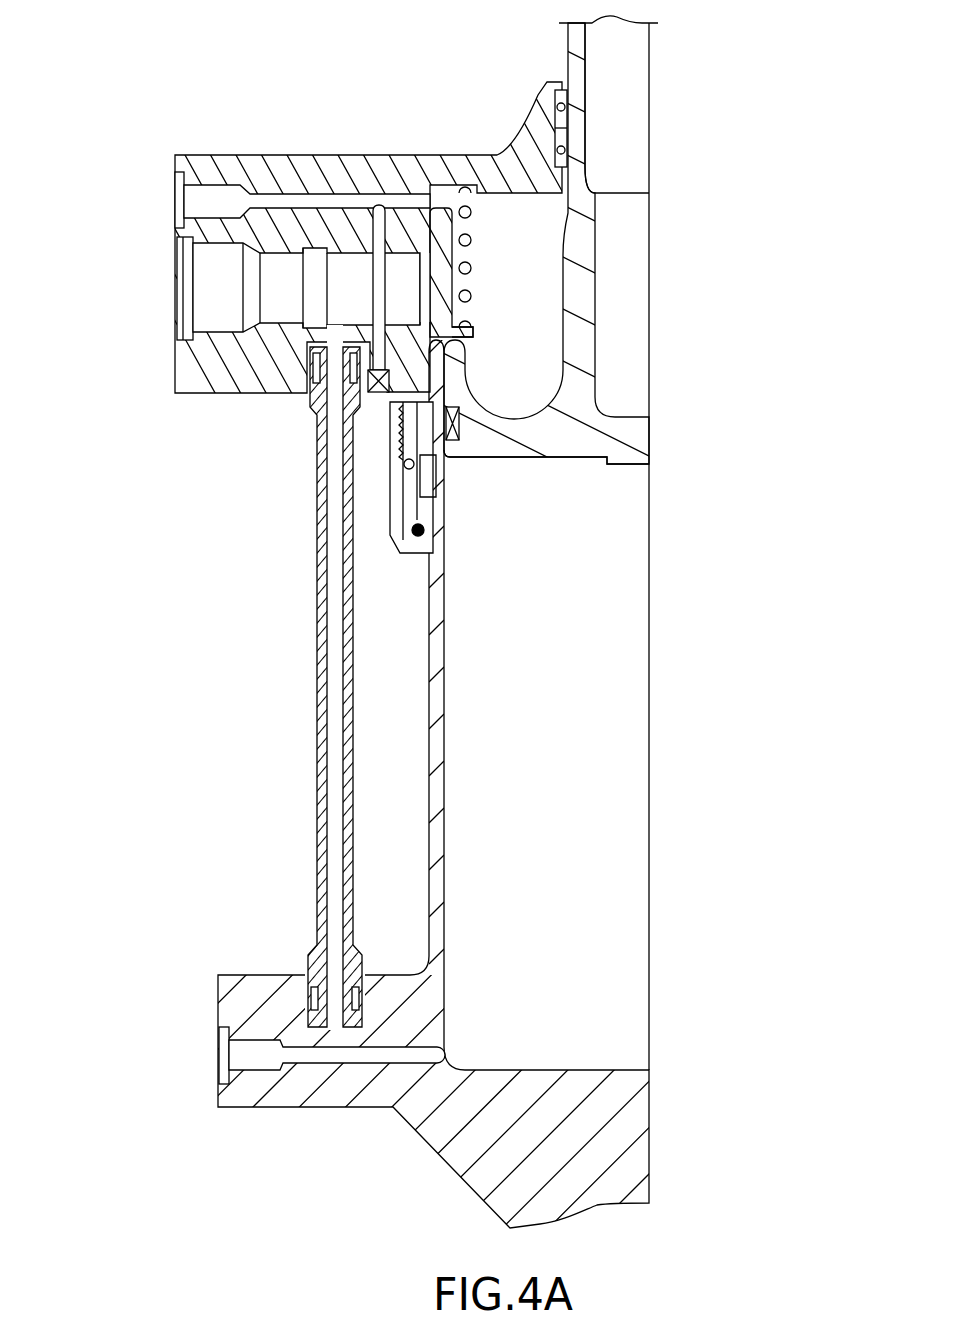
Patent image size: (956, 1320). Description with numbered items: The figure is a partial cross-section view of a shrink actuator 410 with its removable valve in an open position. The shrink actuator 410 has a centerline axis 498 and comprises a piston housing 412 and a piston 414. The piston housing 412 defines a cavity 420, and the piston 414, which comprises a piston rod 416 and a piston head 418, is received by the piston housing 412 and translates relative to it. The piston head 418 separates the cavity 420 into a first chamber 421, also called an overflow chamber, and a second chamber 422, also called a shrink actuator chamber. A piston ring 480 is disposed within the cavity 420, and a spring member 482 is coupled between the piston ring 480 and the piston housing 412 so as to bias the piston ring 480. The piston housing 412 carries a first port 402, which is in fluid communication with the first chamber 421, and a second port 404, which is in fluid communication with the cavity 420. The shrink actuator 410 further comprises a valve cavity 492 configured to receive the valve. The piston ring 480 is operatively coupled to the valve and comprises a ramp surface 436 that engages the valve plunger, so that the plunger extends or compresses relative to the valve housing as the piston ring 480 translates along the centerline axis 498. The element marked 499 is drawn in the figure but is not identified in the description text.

The shrink actuator 410 is at (712, 78).
The piston 414 is at (650, 266).
The piston rod 416 is at (630, 160).
The piston head 418 is at (640, 453).
The centerline axis 498 is at (650, 656).
The cavity 420 is at (543, 657).
The second chamber 422 is at (543, 784).
The first chamber 421 is at (552, 223).
The spring member 482 is at (471, 240).
The piston ring 480 is at (473, 327).
The ramp surface 436 is at (433, 275).
The first port 402 is at (175, 194).
The valve cavity 492 is at (230, 287).
The rod 499 is at (320, 626).
The piston housing 412 is at (436, 770).
The second port 404 is at (222, 1052).